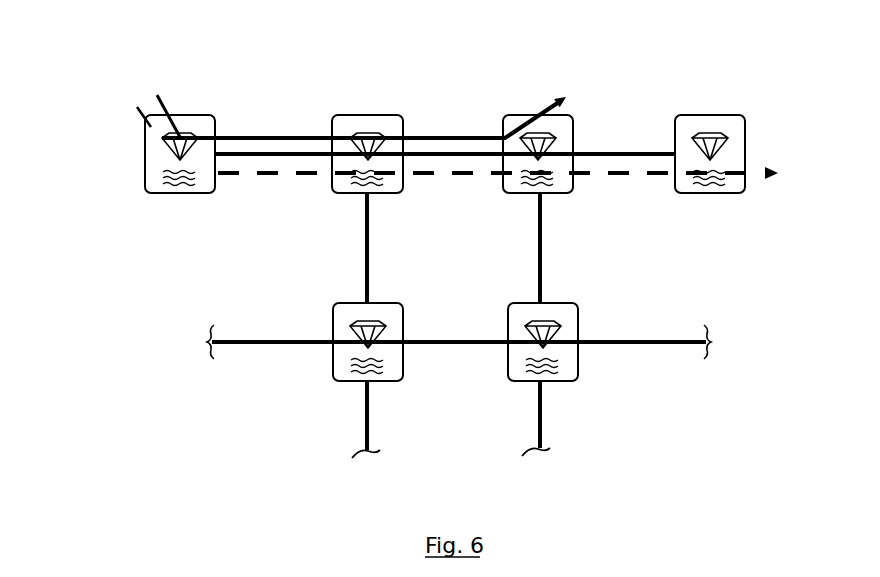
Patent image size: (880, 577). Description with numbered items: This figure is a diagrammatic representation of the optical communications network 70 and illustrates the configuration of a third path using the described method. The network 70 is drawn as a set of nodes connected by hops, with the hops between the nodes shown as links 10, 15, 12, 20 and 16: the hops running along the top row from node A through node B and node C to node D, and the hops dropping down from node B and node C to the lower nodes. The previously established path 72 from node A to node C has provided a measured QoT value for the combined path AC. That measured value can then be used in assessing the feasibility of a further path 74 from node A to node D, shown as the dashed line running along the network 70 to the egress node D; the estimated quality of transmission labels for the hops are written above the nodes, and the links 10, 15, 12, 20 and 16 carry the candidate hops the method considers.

The optical link 10 is at (424, 211).
The optical link 12 is at (589, 130).
The optical link 15 is at (359, 129).
The optical link 16 is at (516, 248).
The optical link 20 is at (342, 248).
The optical communications network 70 is at (183, 430).
The previously established path 72 is at (308, 133).
The path 74 is at (273, 177).